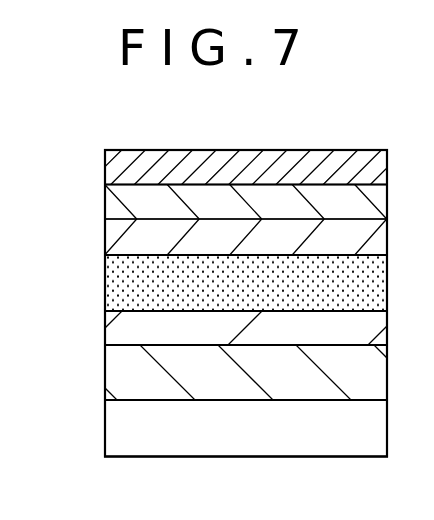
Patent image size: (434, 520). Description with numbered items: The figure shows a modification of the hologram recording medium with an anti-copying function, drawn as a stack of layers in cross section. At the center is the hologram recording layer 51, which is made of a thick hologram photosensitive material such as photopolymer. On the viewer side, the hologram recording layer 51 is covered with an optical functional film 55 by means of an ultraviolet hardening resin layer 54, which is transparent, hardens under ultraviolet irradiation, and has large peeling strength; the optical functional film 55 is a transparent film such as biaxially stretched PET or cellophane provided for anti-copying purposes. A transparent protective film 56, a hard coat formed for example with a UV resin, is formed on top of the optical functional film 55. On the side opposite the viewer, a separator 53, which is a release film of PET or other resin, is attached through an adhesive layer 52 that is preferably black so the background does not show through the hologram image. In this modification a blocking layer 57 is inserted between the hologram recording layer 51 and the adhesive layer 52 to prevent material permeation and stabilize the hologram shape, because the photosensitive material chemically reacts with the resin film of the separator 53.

The transparent protective film 56 is at (110, 168).
The optical functional film 55 is at (110, 202).
The ultraviolet hardening resin layer 54 is at (110, 238).
The hologram recording layer 51 is at (110, 276).
The blocking layer 57 is at (112, 322).
The adhesive layer 52 is at (110, 374).
The separator 53 is at (110, 430).